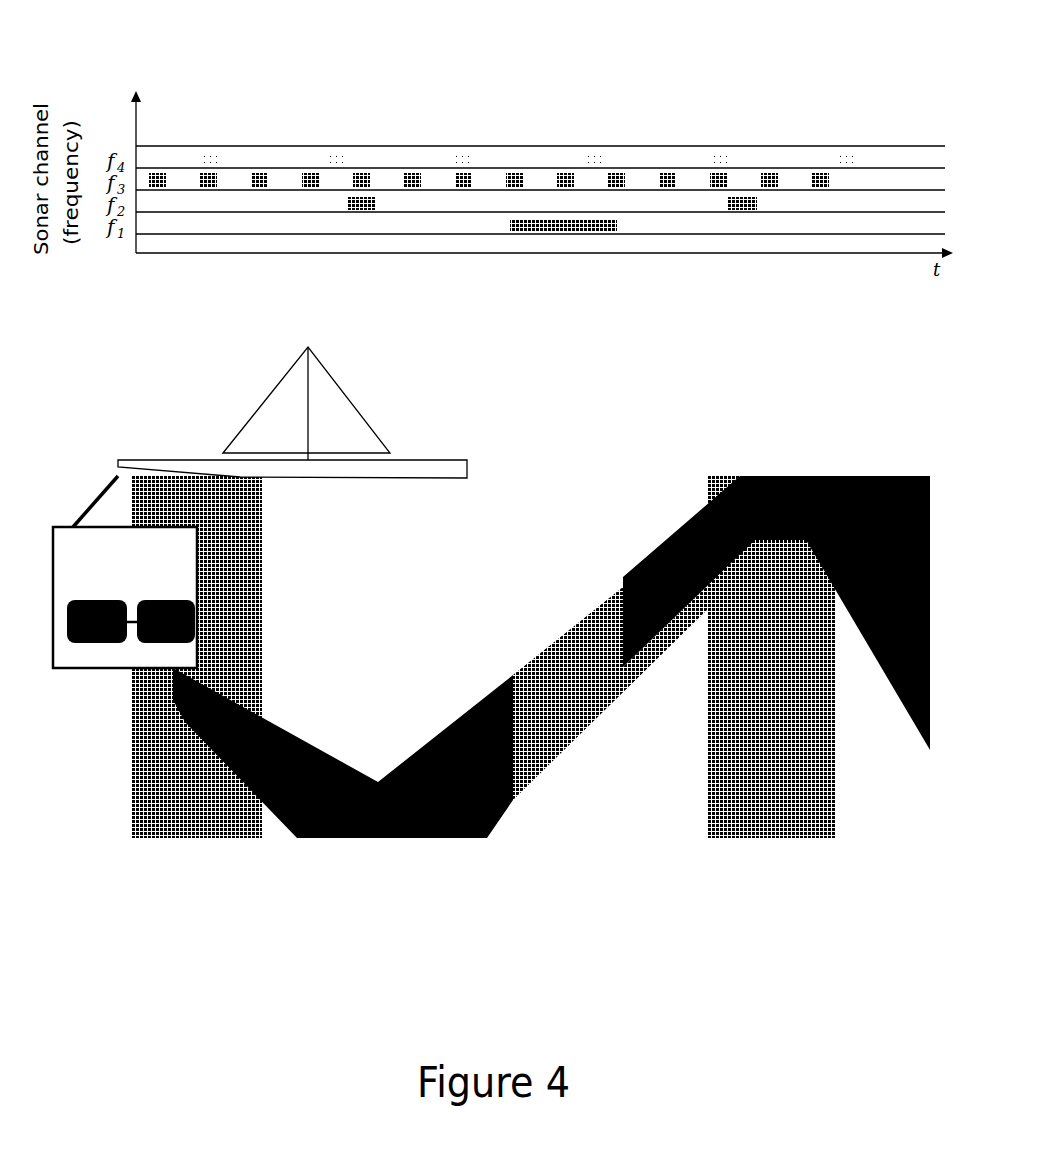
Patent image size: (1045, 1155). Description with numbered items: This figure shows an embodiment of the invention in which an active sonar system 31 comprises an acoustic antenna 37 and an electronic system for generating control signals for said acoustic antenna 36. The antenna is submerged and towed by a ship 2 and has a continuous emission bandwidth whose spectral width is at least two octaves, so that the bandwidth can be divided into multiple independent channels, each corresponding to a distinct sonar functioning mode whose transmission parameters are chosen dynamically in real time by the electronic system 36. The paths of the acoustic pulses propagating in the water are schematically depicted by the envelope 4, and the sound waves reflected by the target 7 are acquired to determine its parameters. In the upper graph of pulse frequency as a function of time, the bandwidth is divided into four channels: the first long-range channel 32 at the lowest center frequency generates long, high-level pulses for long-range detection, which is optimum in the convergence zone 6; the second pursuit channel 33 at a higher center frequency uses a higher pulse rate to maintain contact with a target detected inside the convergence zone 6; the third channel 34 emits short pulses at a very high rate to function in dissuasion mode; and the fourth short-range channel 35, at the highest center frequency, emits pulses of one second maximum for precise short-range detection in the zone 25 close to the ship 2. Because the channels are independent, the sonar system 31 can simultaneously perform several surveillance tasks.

The ship 2 is at (362, 413).
The envelope 4 is at (440, 818).
The convergence zone 6 is at (765, 808).
The target 7 is at (773, 522).
The zone close to the ship 25 is at (228, 808).
The active sonar system 31 is at (125, 621).
The first long-range channel 32 is at (588, 232).
The second pursuit channel 33 is at (746, 208).
The third channel (dissuasion) 34 is at (312, 176).
The fourth short-range channel 35 is at (207, 152).
The electronic system for generating control signals 36 is at (165, 643).
The acoustic antenna 37 is at (97, 600).